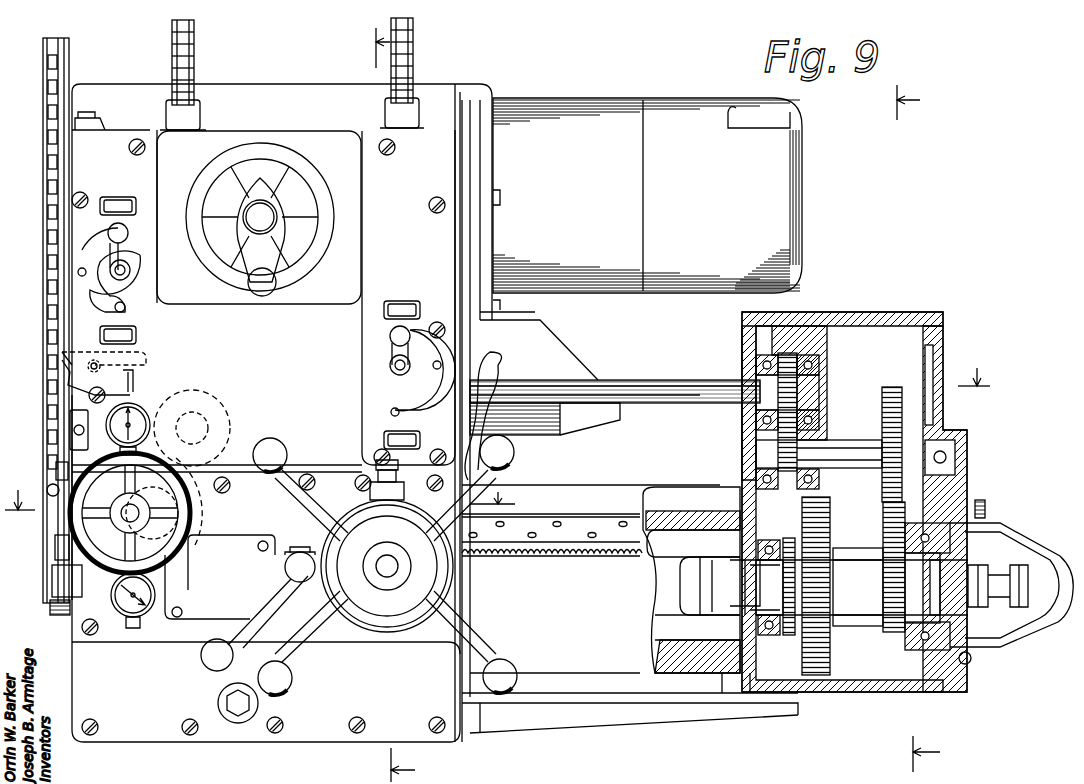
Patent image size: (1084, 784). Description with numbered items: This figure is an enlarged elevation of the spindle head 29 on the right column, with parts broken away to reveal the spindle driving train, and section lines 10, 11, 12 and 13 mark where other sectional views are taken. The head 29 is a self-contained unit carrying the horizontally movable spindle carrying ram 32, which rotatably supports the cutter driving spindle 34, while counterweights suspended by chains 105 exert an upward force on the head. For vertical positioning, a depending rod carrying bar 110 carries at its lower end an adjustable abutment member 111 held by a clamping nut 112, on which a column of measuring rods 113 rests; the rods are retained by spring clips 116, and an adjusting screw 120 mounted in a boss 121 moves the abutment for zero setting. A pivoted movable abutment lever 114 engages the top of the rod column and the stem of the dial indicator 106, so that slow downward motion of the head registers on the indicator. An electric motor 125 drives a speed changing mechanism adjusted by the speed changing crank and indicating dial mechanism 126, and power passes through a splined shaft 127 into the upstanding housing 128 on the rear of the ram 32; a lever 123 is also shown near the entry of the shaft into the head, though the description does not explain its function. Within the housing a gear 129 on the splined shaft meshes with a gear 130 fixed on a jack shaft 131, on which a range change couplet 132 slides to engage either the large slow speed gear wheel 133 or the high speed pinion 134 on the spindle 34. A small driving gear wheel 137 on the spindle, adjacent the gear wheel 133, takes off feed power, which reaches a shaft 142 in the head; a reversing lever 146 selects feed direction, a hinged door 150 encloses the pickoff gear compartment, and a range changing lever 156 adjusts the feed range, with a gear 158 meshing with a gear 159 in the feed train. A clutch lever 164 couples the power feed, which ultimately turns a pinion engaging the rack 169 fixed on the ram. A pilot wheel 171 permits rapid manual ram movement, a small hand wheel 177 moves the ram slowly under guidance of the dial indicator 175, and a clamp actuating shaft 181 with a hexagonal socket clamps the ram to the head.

The section line 10- 10 is at (980, 377).
The section line 11- 11 is at (260, 498).
The section line 12- 12 is at (383, 405).
The section line 13- 13 is at (930, 428).
The spindle head 29 is at (290, 103).
The spindle carrying ram 32 is at (545, 660).
The cutter driving spindle 34 is at (696, 584).
The chains 105 is at (415, 45).
The dial indicator 106 is at (148, 416).
The rod carrying bar 110 is at (60, 367).
The adjustable abutment member 111 is at (56, 470).
The clamping nut 112 is at (50, 490).
The measuring rods 113 is at (68, 400).
The movable abutment lever 114 is at (58, 349).
The spring clips 116 is at (52, 234).
The adjusting screw 120 is at (58, 600).
The boss 121 is at (50, 565).
The lever 123 is at (498, 364).
The electric motor 125 is at (586, 120).
The speed changing crank and indicating dial mechanism 126 is at (226, 190).
The splined shaft 127 is at (644, 382).
The upstanding housing 128 is at (845, 312).
The gear 129 is at (792, 353).
The gear 130 is at (805, 446).
The jack shaft 131 is at (840, 485).
The range change couplet 132 is at (890, 386).
The large slow speed gear wheel 133 is at (830, 668).
The high speed pinion 134 is at (905, 632).
The small driving gear wheel 137 is at (790, 640).
The shaft 142 is at (600, 418).
The reversing lever 146 is at (392, 336).
The hinged door 150 is at (318, 312).
The range changing lever 156 is at (128, 236).
The gear 158 is at (228, 418).
The gear 159 is at (208, 510).
The clutch lever 164 is at (205, 657).
The rack 169 is at (516, 542).
The pilot wheel 171 is at (272, 668).
The dial indicator 175 is at (122, 604).
The hand wheel 177 is at (180, 550).
The clamp actuating shaft 181 is at (225, 700).